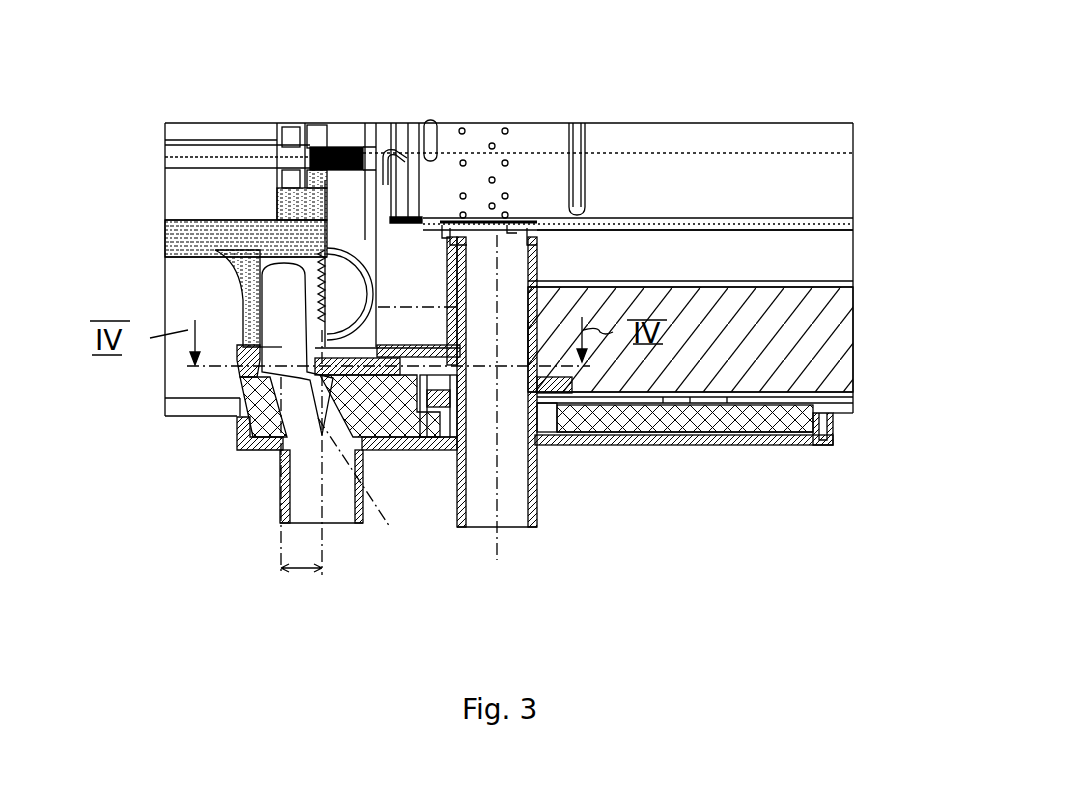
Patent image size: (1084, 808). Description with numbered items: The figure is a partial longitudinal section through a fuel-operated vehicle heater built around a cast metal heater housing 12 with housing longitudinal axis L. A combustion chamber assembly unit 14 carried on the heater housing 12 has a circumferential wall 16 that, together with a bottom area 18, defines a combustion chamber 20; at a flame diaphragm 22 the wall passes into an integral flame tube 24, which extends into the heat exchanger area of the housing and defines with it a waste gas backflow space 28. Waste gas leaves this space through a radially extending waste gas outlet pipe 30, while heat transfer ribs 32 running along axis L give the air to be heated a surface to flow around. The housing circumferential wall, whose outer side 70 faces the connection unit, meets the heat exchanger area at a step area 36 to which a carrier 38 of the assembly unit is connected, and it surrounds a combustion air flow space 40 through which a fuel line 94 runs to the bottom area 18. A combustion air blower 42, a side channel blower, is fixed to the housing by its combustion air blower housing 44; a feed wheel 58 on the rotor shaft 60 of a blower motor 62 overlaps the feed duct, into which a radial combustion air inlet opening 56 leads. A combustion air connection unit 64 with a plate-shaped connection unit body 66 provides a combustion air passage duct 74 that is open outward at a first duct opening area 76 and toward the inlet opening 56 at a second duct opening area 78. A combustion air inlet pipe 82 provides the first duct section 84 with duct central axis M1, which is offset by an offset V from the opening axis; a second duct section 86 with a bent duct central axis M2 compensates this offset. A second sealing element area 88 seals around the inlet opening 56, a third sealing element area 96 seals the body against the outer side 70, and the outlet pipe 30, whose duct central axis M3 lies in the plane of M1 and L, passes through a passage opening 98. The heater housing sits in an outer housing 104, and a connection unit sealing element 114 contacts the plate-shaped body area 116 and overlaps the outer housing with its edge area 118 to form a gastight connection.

The heater housing 12 is at (862, 298).
The combustion chamber assembly unit 14 is at (617, 120).
The circumferential wall 16 is at (560, 125).
The bottom area 18 is at (390, 245).
The combustion chamber 20 is at (522, 137).
The flame diaphragm 22 is at (560, 150).
The flame tube 24 is at (713, 217).
The waste gas backflow space 28 is at (823, 253).
The waste gas outlet pipe 30 is at (538, 505).
The heat transfer ribs 32 is at (838, 373).
The step area 36 is at (533, 340).
The carrier 38 is at (453, 273).
The combustion air flow space 40 is at (347, 130).
The combustion air blower 42 is at (141, 212).
The combustion air blower housing 44 is at (220, 255).
The combustion air inlet opening 56 is at (237, 362).
The feed wheel 58 is at (327, 223).
The rotor shaft 60 is at (213, 143).
The blower motor 62 is at (181, 113).
The combustion air connection unit 64 is at (778, 400).
The connection unit body 66 is at (753, 420).
The outer side 70 is at (280, 323).
The combustion air passage duct 74 is at (303, 460).
The first duct opening area 76 is at (287, 525).
The second duct opening area 78 is at (240, 405).
The combustion air inlet pipe 82 is at (337, 525).
The first duct section 84 is at (337, 493).
The second duct section 86 is at (262, 437).
The second sealing element area 88 is at (228, 372).
The fuel line 94 is at (277, 322).
The third sealing element area 96 is at (367, 357).
The passage opening 98 is at (500, 440).
The outer housing 104 is at (860, 403).
The connection unit sealing element 114 is at (807, 432).
The plate-shaped body area 116 is at (733, 442).
The edge area 118 is at (837, 428).
The housing longitudinal axis L is at (838, 152).
The offset V is at (285, 575).
The duct central axis M1 is at (325, 575).
The duct central axis M2 is at (390, 527).
The duct central axis M3 is at (505, 550).